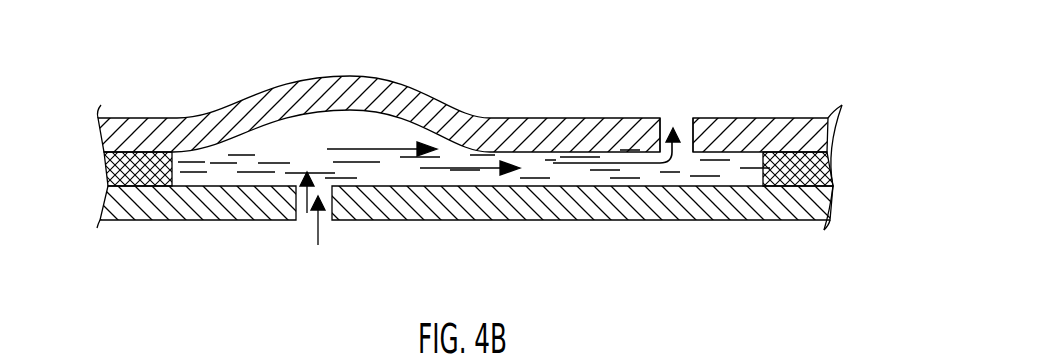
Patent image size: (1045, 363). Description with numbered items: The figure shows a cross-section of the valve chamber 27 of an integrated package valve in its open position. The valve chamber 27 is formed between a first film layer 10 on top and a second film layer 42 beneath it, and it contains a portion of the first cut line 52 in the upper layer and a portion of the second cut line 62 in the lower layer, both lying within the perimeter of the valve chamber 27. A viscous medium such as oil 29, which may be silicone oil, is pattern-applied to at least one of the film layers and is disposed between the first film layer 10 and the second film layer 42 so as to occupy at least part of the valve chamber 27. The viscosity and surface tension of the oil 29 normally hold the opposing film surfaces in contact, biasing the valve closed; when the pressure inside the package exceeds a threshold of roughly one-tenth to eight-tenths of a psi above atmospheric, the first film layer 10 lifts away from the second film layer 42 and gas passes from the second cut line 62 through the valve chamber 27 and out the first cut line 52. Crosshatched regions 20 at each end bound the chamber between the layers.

The first film layer 10 is at (108, 137).
The adhesive seal 20 is at (124, 153).
The second film layer 42 is at (118, 206).
The second cut line 62 is at (296, 235).
The oil 29 is at (543, 172).
The first cut line 52 is at (682, 98).
The valve chamber 27 is at (860, 50).